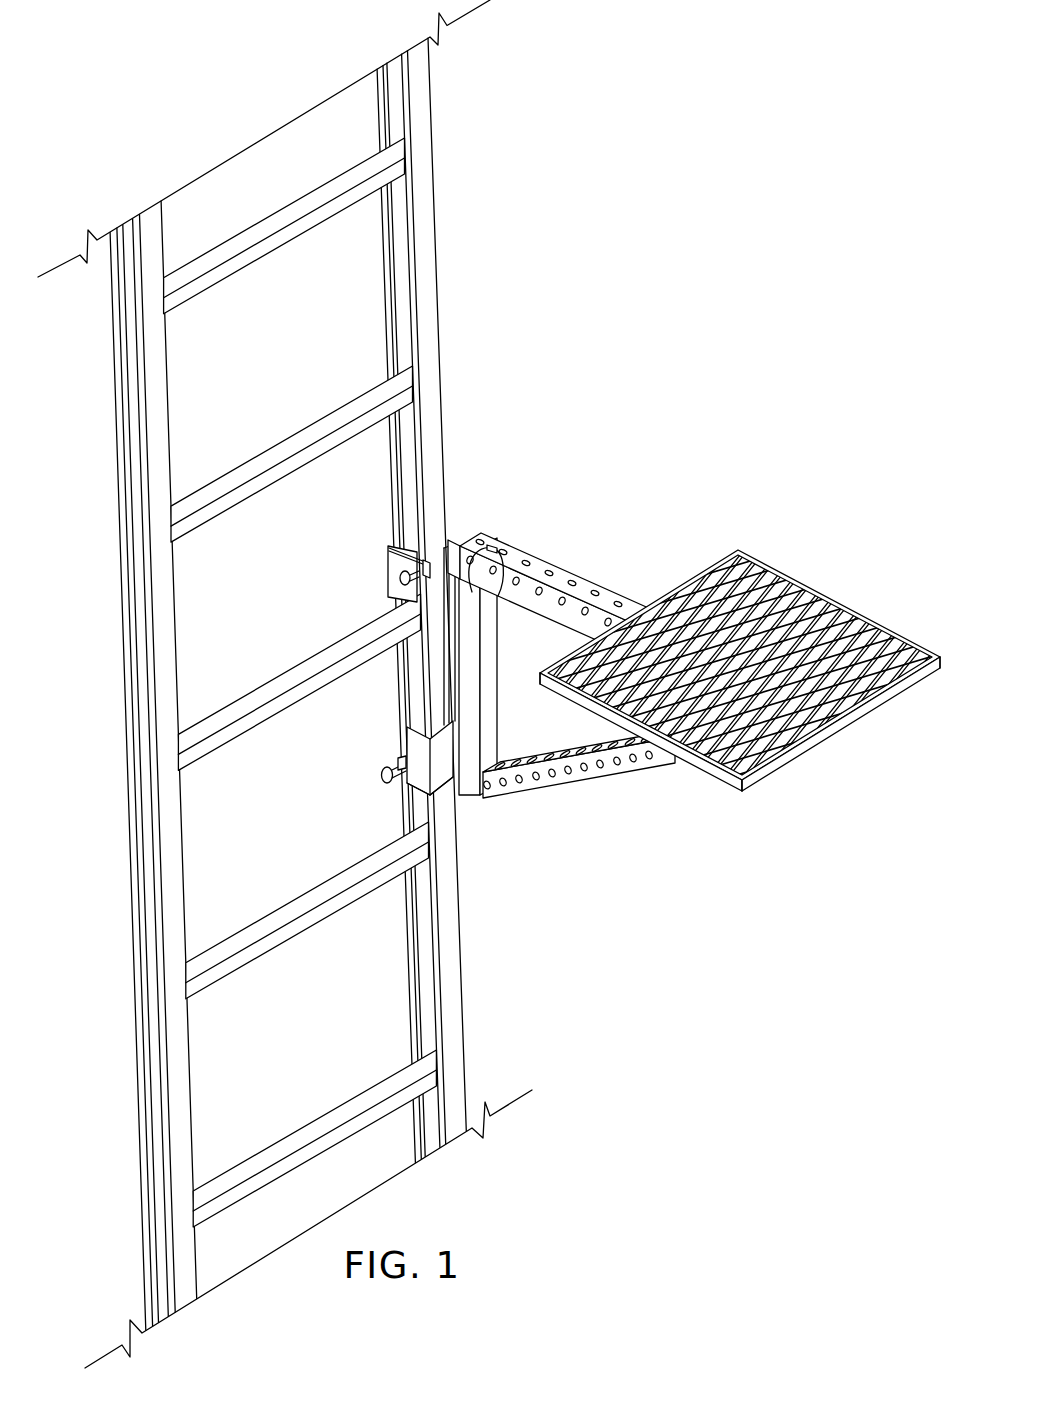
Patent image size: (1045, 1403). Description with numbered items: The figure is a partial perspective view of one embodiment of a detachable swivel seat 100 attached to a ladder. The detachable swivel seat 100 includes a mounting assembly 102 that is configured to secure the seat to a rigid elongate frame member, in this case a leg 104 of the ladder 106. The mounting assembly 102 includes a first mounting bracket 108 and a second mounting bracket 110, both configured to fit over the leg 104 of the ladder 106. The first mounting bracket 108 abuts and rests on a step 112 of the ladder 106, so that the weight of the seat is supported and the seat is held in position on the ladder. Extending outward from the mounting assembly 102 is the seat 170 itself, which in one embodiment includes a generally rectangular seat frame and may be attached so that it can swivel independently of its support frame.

The detachable swivel seat 100 is at (664, 617).
The mounting assembly 102 is at (497, 618).
The leg 104 is at (285, 684).
The ladder 106 is at (423, 203).
The first mounting bracket 108 is at (378, 564).
The second mounting bracket 110 is at (381, 760).
The step 112 is at (258, 948).
The seat 170 is at (832, 736).